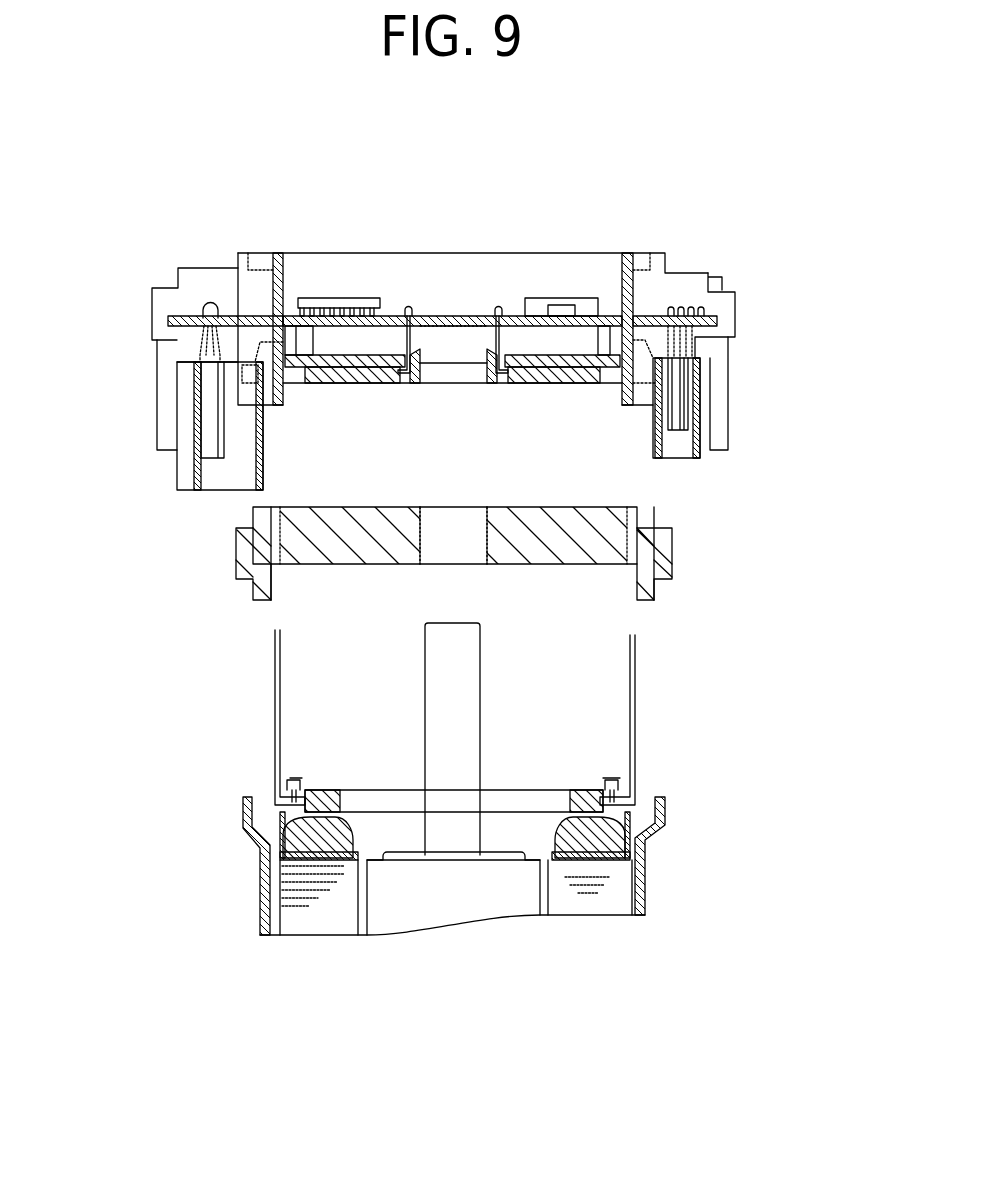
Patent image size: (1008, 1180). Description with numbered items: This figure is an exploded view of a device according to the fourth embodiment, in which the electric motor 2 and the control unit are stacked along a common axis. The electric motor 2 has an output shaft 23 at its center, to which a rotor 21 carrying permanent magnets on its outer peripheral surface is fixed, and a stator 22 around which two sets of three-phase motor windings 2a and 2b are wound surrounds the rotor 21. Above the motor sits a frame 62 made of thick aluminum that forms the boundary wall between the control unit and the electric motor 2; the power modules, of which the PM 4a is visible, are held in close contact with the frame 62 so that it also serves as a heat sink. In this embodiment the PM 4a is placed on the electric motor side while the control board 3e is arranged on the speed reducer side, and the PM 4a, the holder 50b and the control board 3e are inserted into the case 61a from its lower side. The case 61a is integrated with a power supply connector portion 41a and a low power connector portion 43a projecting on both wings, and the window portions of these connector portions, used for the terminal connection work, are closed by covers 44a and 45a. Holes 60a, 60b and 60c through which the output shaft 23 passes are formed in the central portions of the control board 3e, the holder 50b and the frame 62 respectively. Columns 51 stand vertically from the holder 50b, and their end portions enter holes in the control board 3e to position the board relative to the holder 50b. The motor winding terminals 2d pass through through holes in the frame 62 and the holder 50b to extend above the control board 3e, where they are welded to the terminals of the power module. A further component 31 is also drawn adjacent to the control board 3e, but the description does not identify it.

The electric motor 2 is at (655, 877).
The three-phase motor winding 2a is at (640, 818).
The three-phase motor winding 2b is at (455, 835).
The motor winding terminal 2d is at (637, 683).
The rotor 21 is at (410, 913).
The stator 22 is at (327, 920).
The output shaft 23 is at (482, 685).
The electronic component 31 is at (355, 297).
The control board 3e is at (516, 300).
The PM 4a is at (340, 377).
The power supply connector portion 41a is at (197, 482).
The low power connector portion 43a is at (702, 430).
The cover 44a is at (236, 255).
The cover 45a is at (705, 272).
The holder 50b is at (518, 368).
The column 51 is at (288, 297).
The hole 60a is at (440, 315).
The hole 60b is at (430, 383).
The hole 60c is at (427, 557).
The case 61a is at (668, 253).
The frame 62 is at (672, 540).